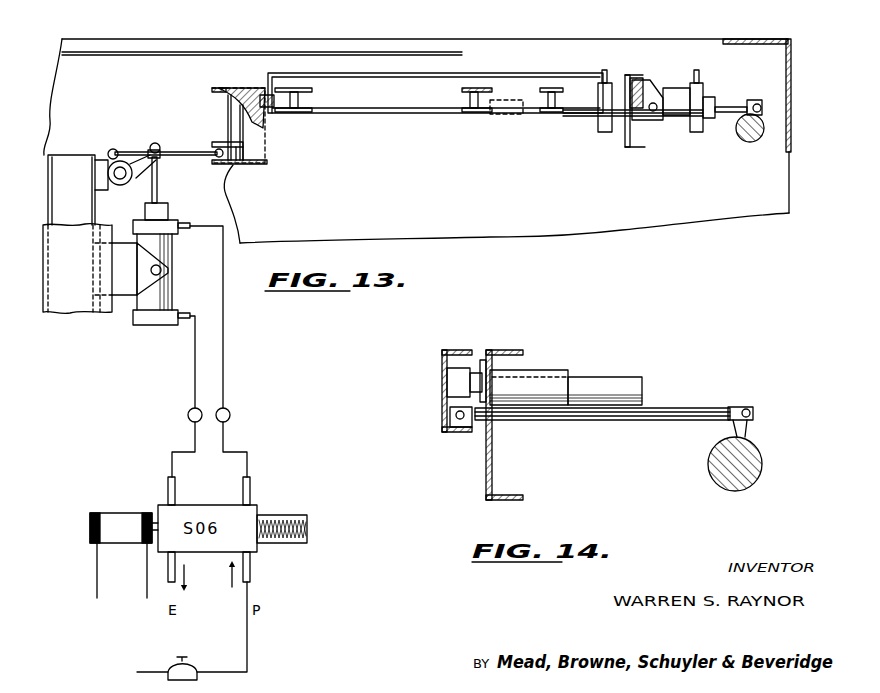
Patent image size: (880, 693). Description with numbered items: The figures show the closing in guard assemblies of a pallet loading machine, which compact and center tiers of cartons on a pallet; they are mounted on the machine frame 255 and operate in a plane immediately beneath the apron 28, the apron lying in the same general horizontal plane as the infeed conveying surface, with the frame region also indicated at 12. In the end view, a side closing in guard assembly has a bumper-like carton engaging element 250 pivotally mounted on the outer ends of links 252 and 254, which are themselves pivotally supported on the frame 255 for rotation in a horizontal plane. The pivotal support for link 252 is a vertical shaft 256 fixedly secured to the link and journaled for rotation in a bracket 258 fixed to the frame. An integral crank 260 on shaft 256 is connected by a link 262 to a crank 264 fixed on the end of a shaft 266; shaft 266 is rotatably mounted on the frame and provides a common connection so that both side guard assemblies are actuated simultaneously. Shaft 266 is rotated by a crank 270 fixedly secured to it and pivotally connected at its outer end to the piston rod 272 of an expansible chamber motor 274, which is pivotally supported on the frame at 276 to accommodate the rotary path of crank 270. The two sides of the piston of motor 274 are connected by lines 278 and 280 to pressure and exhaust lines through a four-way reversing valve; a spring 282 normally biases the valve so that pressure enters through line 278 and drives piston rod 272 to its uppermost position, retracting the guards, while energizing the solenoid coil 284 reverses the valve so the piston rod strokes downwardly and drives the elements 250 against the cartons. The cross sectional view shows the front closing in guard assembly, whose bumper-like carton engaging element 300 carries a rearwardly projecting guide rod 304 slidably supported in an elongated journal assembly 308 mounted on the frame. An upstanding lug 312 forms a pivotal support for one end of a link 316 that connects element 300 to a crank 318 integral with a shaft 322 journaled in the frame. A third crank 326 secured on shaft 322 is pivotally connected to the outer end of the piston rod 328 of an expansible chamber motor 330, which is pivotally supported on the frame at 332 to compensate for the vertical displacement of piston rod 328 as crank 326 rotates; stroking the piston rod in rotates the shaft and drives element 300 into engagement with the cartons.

In FIG. 13, the machine frame 12 is at (425, 19).
In FIG. 13, the apron 28 is at (280, 52).
In FIG. 13, the carton engaging element 250 is at (405, 103).
In FIG. 13, the link 252 is at (293, 112).
In FIG. 13, the link 254 is at (540, 112).
In FIG. 13, the machine frame 255 is at (790, 64).
In FIG. 14, the machine frame 255 is at (512, 500).
In FIG. 13, the vertical shaft 256 is at (229, 113).
In FIG. 13, the bracket 258 is at (226, 92).
In FIG. 13, the crank 260 is at (230, 142).
In FIG. 13, the link 262 is at (175, 152).
In FIG. 13, the crank 264 is at (110, 152).
In FIG. 13, the shaft 266 is at (120, 186).
In FIG. 13, the crank 270 is at (147, 151).
In FIG. 13, the piston rod 272 is at (158, 182).
In FIG. 13, the expansible chamber motor 274 is at (173, 268).
In FIG. 13, the pivotal support 276 is at (140, 283).
In FIG. 13, the line 278 is at (190, 378).
In FIG. 13, the line 280 is at (225, 378).
In FIG. 13, the spring 282 is at (272, 515).
In FIG. 13, the solenoid coil 284 is at (116, 513).
In FIG. 14, the carton engaging element 300 is at (447, 371).
In FIG. 14, the guide rod 304 is at (642, 386).
In FIG. 14, the journal assembly 308 is at (540, 372).
In FIG. 14, the upstanding lug 312 is at (457, 428).
In FIG. 14, the link 316 is at (568, 422).
In FIG. 14, the crank 318 is at (750, 432).
In FIG. 13, the shaft 322 is at (749, 142).
In FIG. 14, the shaft 322 is at (708, 466).
In FIG. 13, the third crank 326 is at (762, 116).
In FIG. 13, the piston rod 328 is at (734, 106).
In FIG. 13, the expansible chamber motor 330 is at (679, 122).
In FIG. 13, the pivotal support 332 is at (642, 96).